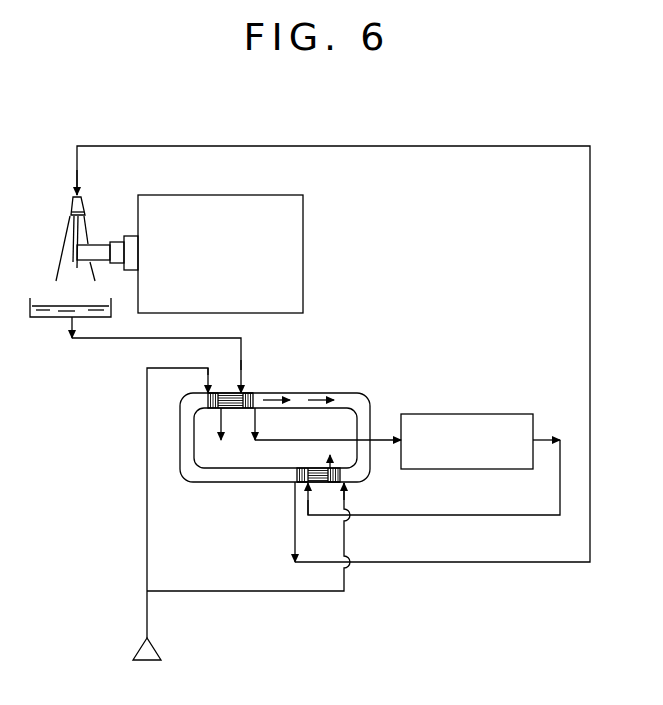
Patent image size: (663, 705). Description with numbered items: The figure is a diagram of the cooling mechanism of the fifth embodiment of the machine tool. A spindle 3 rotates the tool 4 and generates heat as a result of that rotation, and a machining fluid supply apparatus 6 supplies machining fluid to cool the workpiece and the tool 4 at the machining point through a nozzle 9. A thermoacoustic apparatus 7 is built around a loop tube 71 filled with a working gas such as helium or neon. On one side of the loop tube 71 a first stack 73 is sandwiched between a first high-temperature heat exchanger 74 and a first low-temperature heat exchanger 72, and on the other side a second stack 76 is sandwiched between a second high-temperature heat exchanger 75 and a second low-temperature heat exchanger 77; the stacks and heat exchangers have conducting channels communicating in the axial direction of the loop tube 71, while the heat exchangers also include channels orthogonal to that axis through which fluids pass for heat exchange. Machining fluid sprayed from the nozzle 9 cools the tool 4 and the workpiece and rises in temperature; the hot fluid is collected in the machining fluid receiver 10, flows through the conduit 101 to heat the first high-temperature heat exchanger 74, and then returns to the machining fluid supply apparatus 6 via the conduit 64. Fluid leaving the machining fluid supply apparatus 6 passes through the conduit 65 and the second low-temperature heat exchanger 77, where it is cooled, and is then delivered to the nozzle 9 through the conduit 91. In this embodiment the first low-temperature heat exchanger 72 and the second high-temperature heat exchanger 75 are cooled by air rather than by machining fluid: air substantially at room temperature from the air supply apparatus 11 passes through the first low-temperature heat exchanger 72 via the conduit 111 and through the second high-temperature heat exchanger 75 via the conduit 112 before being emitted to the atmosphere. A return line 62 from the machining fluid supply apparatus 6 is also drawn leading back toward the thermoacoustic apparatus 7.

The spindle 3 is at (213, 212).
The tool 4 is at (100, 250).
The machining fluid supply apparatus 6 is at (528, 416).
The thermoacoustic apparatus 7 is at (346, 372).
The nozzle 9 is at (72, 209).
The machining fluid receiver 10 is at (50, 313).
The air supply apparatus 11 is at (143, 647).
The return pipe 62 is at (346, 493).
The conduit 64 is at (288, 440).
The conduit 65 is at (313, 493).
The loop tube 71 is at (232, 475).
The first low-temperature heat exchanger 72 is at (206, 393).
The first stack 73 is at (232, 393).
The first high-temperature heat exchanger 74 is at (249, 393).
The second high-temperature heat exchanger 75 is at (337, 473).
The second stack 76 is at (326, 475).
The second low-temperature heat exchanger 77 is at (297, 468).
The conduit 91 is at (325, 147).
The conduit 101 is at (137, 340).
The conduit 111 is at (147, 455).
The conduit 112 is at (278, 592).